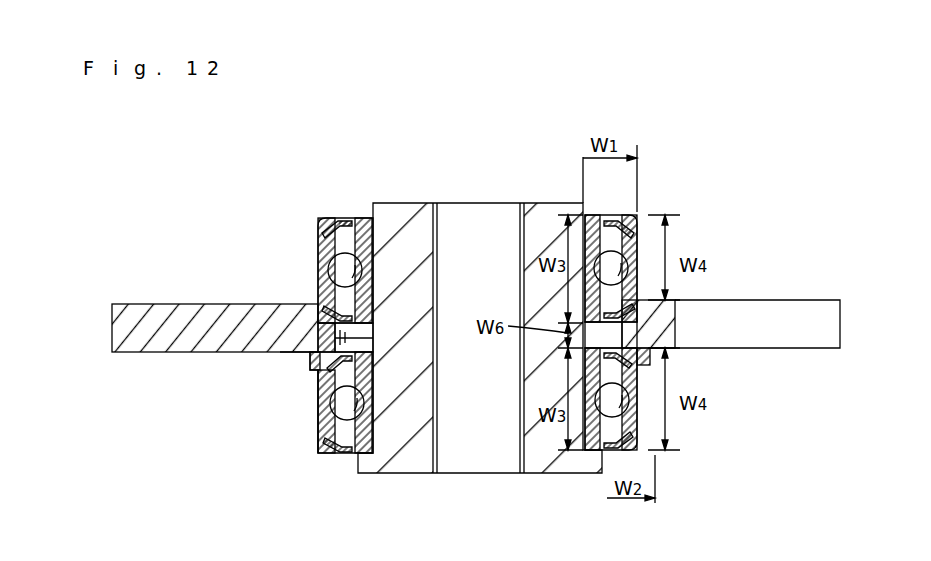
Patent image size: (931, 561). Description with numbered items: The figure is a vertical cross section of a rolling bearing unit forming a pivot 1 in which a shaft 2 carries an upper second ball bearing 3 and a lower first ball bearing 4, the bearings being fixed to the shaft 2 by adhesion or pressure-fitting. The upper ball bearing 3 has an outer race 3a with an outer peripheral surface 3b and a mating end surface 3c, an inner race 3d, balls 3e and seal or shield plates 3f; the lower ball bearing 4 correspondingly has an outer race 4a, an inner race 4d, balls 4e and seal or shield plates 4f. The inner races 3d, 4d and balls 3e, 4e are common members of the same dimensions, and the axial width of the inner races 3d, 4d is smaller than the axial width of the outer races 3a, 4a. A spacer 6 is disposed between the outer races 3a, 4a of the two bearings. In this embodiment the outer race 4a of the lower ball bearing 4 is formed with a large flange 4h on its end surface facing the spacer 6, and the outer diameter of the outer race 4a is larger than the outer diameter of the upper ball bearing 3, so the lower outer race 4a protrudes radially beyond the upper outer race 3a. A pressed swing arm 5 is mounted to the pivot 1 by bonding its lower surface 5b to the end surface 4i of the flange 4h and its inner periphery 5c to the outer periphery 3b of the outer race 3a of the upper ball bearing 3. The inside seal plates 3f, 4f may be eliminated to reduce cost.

The pivot 1 is at (480, 307).
The shaft 2 is at (390, 210).
The second ball bearing 3 is at (335, 253).
The outer race of the second ball bearing 3a is at (318, 238).
The outer peripheral surface of the outer race 3b is at (320, 265).
The mating end surface of the second ball bearing 3c is at (320, 317).
The inner race of the second ball bearing 3d is at (360, 243).
The balls of the second ball bearing 3e is at (316, 232).
The seal or shield plate of the second ball bearing 3f is at (347, 223).
The first ball bearing 4 is at (361, 442).
The outer race of the first ball bearing 4a is at (318, 430).
The inner race of the first ball bearing 4d is at (372, 437).
The balls of the first ball bearing 4e is at (323, 452).
The seal or shield plate of the first ball bearing 4f is at (348, 455).
The flange 4h is at (312, 365).
The end surface of the flange 4i is at (303, 352).
The swing arm 5 is at (164, 312).
The lower surface of the swing arm 5b is at (313, 378).
The inner periphery of the swing arm 5c is at (338, 334).
The spacer 6 is at (322, 337).